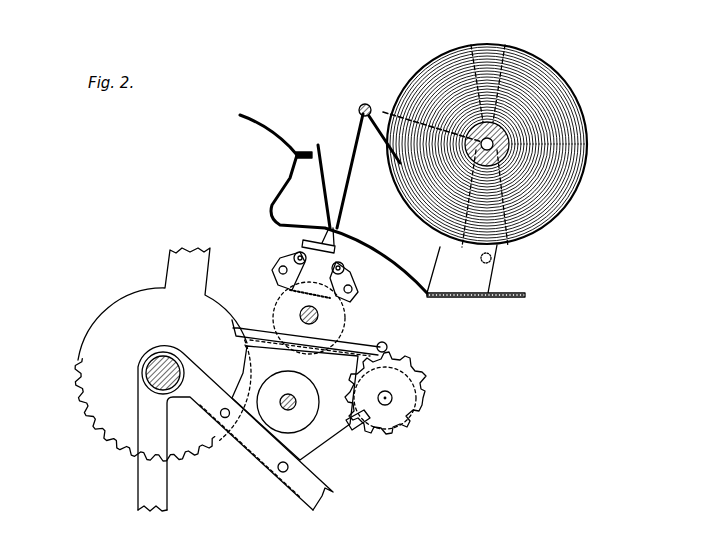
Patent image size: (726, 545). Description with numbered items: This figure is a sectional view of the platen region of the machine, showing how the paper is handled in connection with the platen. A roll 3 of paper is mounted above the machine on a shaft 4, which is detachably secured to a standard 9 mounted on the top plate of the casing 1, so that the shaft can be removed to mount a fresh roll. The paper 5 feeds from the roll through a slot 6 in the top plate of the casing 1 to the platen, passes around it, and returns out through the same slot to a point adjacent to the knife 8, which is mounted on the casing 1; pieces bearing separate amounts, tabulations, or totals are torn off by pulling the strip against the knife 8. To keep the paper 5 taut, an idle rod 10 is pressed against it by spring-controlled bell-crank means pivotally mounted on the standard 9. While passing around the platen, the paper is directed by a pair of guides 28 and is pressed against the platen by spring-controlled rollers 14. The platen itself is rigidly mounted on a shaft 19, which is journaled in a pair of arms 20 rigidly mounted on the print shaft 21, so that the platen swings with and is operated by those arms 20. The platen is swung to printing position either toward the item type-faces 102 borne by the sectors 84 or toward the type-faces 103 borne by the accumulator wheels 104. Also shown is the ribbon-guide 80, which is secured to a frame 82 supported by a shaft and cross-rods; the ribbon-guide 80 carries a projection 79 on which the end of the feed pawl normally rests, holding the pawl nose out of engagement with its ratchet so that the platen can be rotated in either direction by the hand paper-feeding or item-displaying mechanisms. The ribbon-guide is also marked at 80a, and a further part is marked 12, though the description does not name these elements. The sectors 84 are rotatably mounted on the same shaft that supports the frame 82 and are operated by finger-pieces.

The casing 1 is at (283, 182).
The roll of paper 3 is at (538, 74).
The shaft 4 is at (493, 144).
The paper 5 is at (354, 147).
The slot 6 is at (326, 224).
The knife 8 is at (304, 150).
The standard 9 is at (476, 171).
The idle rod 10 is at (362, 104).
The tape 12 is at (382, 111).
The spring-controlled rollers 14 is at (276, 269).
The shaft 19 is at (320, 315).
The arms 20 is at (288, 402).
The print shaft 21 is at (284, 396).
The guides 28 is at (282, 311).
The projection 79 is at (346, 432).
The ribbon-guide 80 is at (295, 403).
The lever plate 80a is at (352, 349).
The frame 82 is at (197, 398).
The sectors 84 is at (164, 344).
The item type-faces 102 is at (215, 445).
The type-faces 103 is at (408, 383).
The accumulator wheels 104 is at (426, 392).